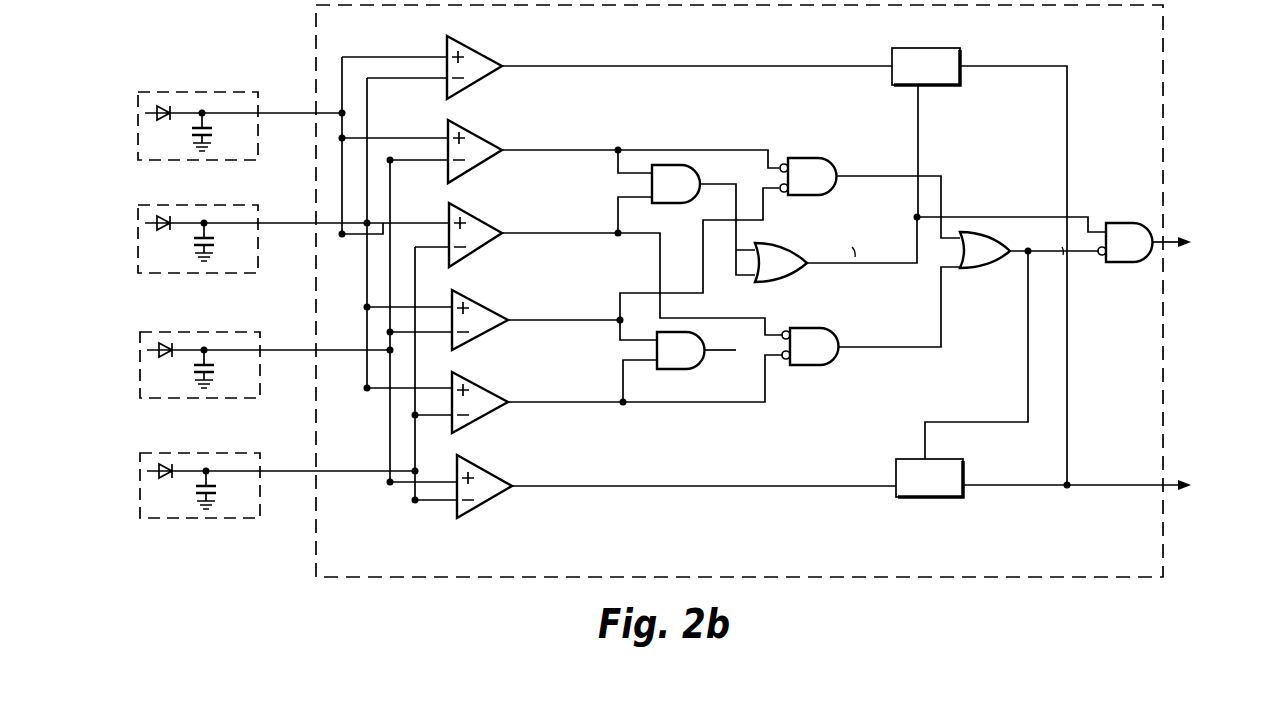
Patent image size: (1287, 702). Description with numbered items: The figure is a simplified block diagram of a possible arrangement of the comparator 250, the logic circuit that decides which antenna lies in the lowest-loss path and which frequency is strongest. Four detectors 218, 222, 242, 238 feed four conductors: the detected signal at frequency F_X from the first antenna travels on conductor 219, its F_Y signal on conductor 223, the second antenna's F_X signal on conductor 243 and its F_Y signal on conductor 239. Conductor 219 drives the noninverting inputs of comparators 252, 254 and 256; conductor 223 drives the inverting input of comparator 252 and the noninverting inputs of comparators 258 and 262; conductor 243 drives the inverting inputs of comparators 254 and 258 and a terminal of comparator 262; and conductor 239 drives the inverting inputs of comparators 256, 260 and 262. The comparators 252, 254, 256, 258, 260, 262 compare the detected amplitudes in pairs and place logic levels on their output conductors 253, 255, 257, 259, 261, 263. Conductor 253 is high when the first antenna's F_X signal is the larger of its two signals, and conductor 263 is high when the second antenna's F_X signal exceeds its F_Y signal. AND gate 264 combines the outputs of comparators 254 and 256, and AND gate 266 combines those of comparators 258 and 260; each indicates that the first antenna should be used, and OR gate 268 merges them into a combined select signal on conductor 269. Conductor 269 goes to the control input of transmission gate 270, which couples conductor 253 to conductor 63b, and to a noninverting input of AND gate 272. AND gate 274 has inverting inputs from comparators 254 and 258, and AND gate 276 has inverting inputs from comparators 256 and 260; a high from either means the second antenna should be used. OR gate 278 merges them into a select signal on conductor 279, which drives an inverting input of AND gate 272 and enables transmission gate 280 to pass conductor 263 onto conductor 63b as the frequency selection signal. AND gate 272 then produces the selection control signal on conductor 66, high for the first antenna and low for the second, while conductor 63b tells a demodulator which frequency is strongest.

The detector 218 is at (174, 90).
The conductor 219 is at (300, 123).
The detector 222 is at (176, 203).
The conductor 223 is at (300, 236).
The detector 242 is at (176, 330).
The conductor 243 is at (300, 360).
The detector 238 is at (178, 451).
The conductor 239 is at (300, 483).
The comparator 250 is at (558, 552).
The comparator 252 is at (444, 52).
The conductor 253 is at (537, 82).
The comparator 254 is at (448, 132).
The output conductor 255 is at (541, 162).
The comparator 256 is at (452, 216).
The output conductor 257 is at (542, 245).
The comparator 258 is at (454, 291).
The output conductor 259 is at (544, 333).
The comparator 260 is at (457, 376).
The output conductor 261 is at (549, 415).
The comparator 262 is at (469, 464).
The conductor 263 is at (551, 497).
The AND gate 264 is at (660, 205).
The AND gate 266 is at (693, 371).
The OR gate 268 is at (768, 242).
The conductor 269 is at (893, 278).
The transmission gate 270 is at (926, 88).
The AND gate 272 is at (1135, 218).
The AND gate 274 is at (820, 156).
The AND gate 276 is at (812, 367).
The OR gate 278 is at (968, 272).
The conductor 279 is at (1028, 339).
The transmission gate 280 is at (942, 458).
The conductor 66 is at (1212, 244).
The conductor 63b is at (1116, 486).